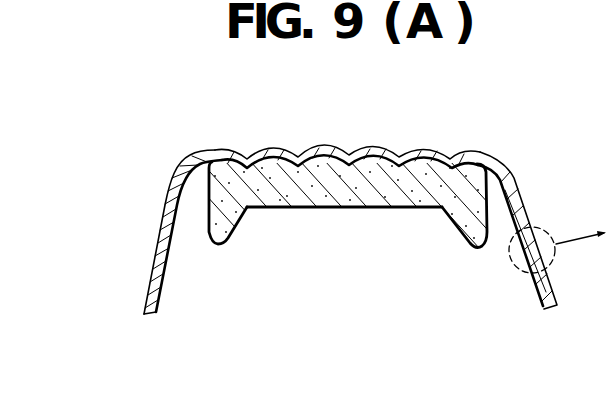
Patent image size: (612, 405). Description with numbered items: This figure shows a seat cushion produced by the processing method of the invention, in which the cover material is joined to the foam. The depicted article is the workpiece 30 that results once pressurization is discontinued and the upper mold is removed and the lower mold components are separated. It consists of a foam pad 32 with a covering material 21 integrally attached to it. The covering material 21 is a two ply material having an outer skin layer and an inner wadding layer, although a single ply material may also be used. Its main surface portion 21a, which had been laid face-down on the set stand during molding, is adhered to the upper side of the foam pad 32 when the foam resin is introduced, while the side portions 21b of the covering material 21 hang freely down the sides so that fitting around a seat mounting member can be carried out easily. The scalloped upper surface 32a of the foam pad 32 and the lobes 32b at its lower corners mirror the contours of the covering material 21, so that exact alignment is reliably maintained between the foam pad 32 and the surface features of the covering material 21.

The workpiece 30 is at (142, 117).
The covering material 21 is at (515, 172).
The main surface portion 21a is at (337, 150).
The side portions 21b is at (162, 223).
The foam pad 32 is at (343, 197).
The scalloped top surface of resin body 32a is at (300, 158).
The lobes / engaging portions of resin body 32b is at (202, 234).